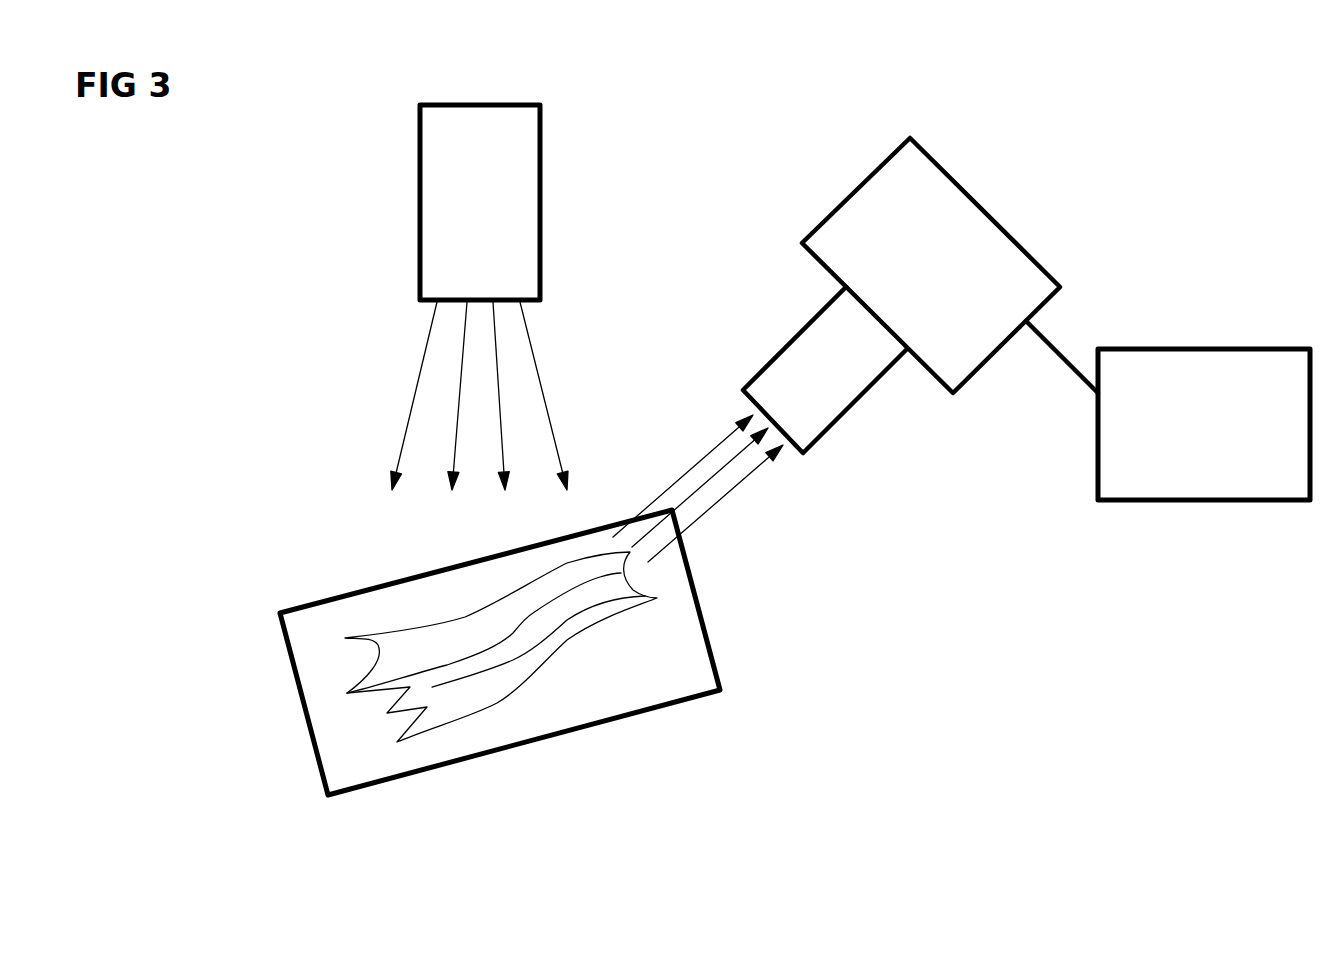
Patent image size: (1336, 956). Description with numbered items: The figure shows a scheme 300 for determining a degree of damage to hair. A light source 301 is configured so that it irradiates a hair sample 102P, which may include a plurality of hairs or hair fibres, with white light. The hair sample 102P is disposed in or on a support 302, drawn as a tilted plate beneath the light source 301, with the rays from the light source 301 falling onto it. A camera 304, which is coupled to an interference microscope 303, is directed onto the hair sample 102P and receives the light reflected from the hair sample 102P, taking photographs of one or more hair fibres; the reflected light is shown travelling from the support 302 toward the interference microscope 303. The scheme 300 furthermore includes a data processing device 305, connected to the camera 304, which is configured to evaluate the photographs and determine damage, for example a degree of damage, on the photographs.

The scheme 300 is at (1129, 82).
The light source 301 is at (538, 104).
The support 302 is at (705, 627).
The interference microscope 303 is at (845, 417).
The camera 304 is at (925, 155).
The data processing device 305 is at (1240, 349).
The hair sample 102P is at (470, 703).